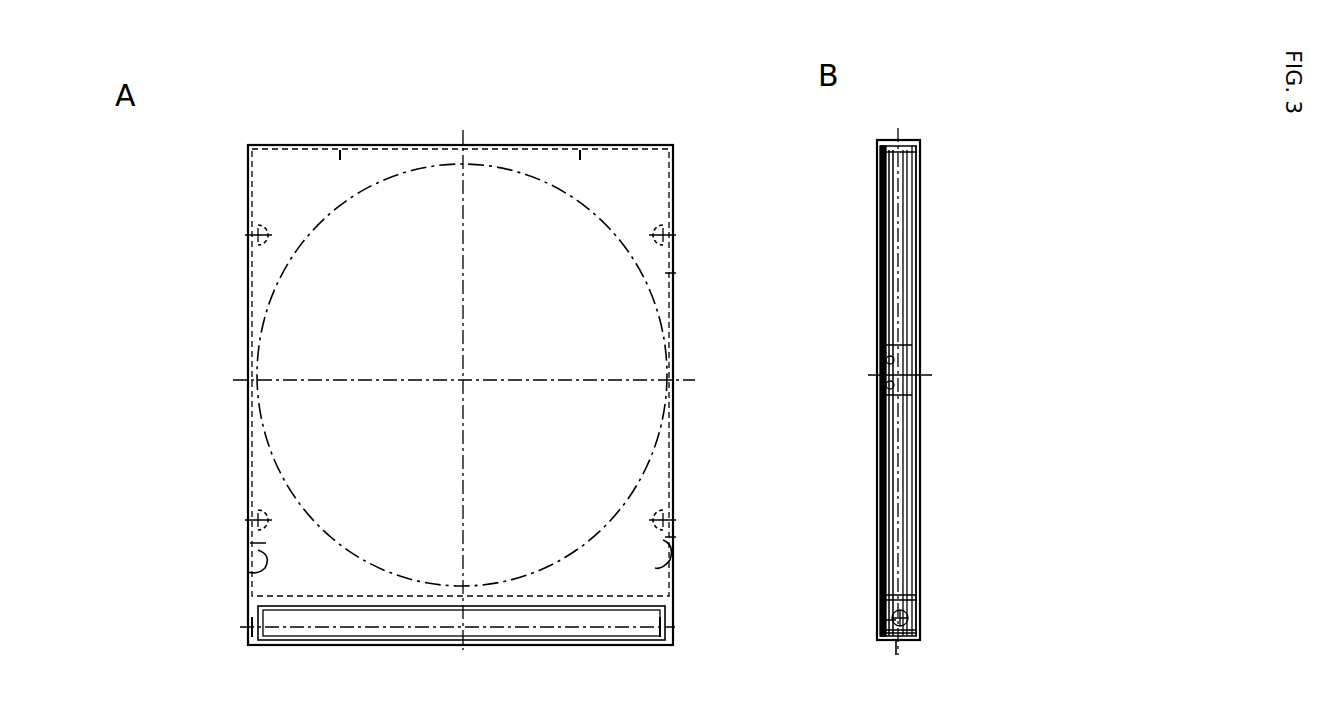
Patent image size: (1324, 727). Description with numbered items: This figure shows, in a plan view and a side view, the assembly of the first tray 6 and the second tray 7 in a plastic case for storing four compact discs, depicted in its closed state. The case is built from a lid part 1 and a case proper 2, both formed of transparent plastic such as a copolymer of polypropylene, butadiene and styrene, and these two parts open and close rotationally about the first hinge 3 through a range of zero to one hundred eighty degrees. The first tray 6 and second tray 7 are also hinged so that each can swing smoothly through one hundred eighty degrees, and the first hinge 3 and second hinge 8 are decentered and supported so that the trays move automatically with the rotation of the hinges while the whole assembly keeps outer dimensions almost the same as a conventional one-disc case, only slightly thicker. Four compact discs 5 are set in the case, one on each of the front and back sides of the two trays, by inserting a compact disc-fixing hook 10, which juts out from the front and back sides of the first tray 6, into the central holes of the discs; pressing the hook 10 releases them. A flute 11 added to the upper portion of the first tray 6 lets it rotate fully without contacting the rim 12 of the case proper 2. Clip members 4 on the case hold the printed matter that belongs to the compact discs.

The lid part 1 is at (270, 262).
The case proper 2 is at (920, 321).
The first hinge 3 is at (920, 640).
The clip members 4 is at (258, 570).
The compact disc 5 is at (270, 488).
The first tray 6 is at (890, 428).
The second tray 7 is at (915, 425).
The second hinge 8 is at (922, 605).
The compact disc-fixing hook 10 is at (882, 357).
The flute 11 is at (878, 592).
The rim 12 is at (890, 640).